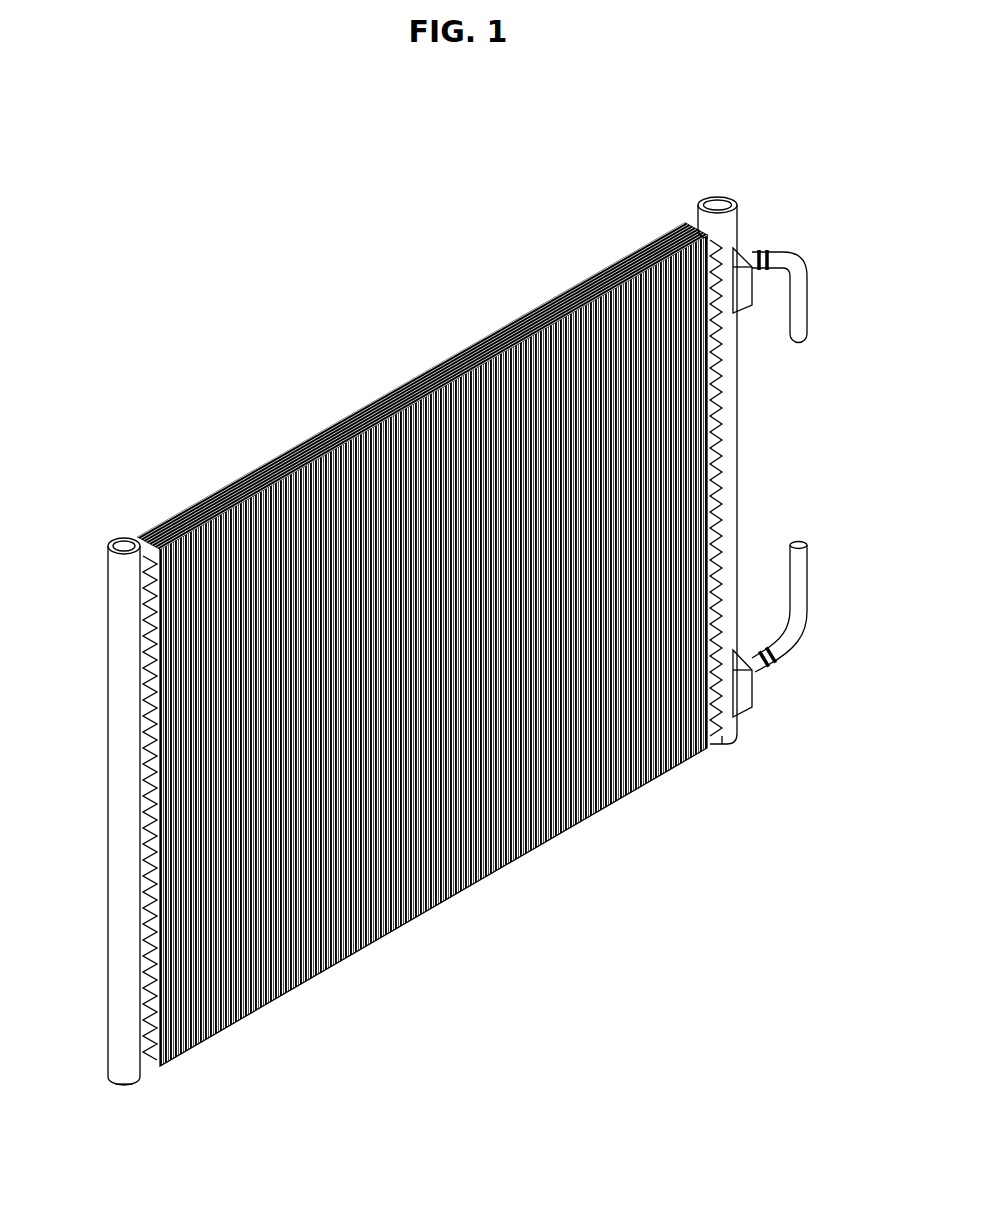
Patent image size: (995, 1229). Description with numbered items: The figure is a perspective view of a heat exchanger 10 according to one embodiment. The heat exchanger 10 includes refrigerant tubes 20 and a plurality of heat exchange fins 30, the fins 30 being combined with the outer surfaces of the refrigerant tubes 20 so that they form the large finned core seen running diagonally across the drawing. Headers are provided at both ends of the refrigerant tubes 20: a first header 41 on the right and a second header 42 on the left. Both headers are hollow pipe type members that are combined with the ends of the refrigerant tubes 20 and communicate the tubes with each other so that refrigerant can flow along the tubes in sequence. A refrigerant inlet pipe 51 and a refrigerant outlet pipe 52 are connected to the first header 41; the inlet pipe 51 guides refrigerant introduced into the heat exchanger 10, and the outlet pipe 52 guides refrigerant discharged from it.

The heat exchanger 10 is at (368, 330).
The refrigerant tubes 20 is at (690, 218).
The heat exchange fins 30 is at (593, 272).
The first header 41 is at (730, 453).
The second header 42 is at (118, 717).
The refrigerant inlet pipe 51 is at (802, 310).
The refrigerant outlet pipe 52 is at (803, 578).